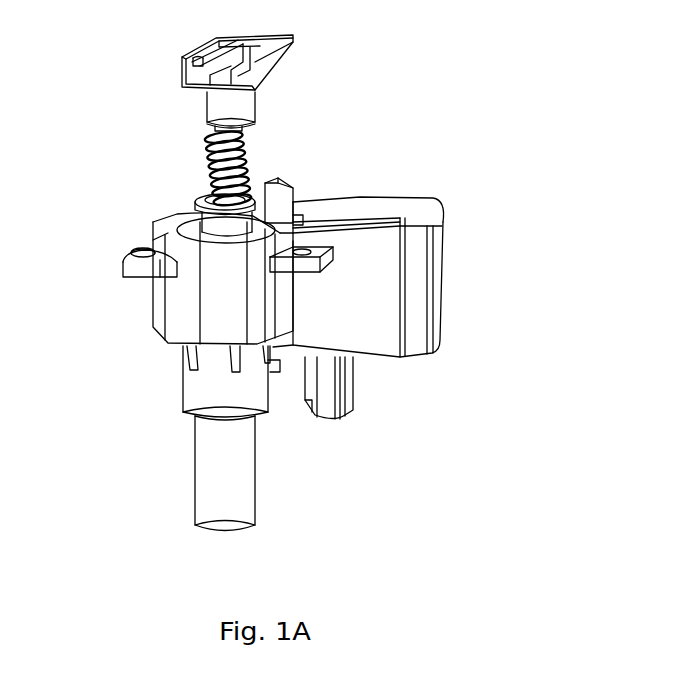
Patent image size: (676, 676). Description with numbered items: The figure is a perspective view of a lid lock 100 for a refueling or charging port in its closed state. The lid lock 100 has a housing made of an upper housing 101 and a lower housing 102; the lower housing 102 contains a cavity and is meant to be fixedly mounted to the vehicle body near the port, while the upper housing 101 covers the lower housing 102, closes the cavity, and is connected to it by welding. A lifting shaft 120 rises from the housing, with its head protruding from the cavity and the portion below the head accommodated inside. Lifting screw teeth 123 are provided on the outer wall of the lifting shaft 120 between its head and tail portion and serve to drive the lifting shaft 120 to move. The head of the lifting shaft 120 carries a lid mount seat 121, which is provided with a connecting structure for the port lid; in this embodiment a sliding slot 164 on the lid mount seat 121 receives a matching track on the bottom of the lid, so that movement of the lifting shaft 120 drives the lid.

The lid lock 100 is at (503, 117).
The upper housing 101 is at (423, 213).
The lower housing 102 is at (433, 323).
The lifting shaft 120 is at (209, 167).
The lid mount seat 121 is at (278, 50).
The lifting screw teeth 123 is at (246, 161).
The sliding slot 164 is at (207, 58).